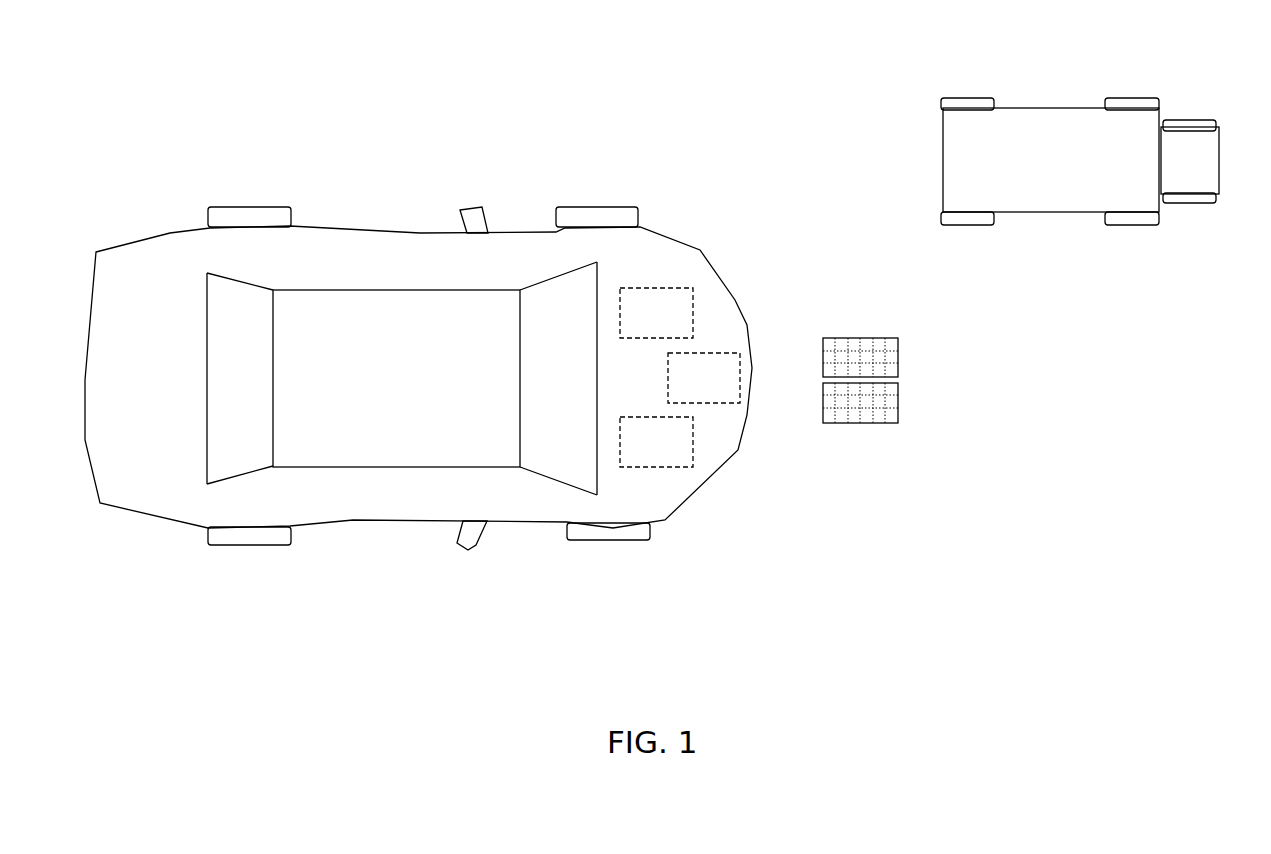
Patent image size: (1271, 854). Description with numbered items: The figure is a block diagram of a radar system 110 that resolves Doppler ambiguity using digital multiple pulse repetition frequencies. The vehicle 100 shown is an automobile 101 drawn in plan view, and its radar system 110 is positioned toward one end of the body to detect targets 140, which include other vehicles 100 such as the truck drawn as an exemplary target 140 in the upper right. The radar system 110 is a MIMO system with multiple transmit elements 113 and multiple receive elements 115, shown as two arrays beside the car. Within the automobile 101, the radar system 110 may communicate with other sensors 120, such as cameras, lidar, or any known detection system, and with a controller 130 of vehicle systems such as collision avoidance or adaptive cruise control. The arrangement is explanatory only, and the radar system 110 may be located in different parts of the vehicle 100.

The vehicle 100 is at (418, 335).
The automobile 101 is at (178, 233).
The target 140 is at (1020, 108).
The radar system 110 is at (817, 339).
The transmit elements 113 is at (880, 360).
The receive elements 115 is at (882, 403).
The other sensors 120 is at (633, 327).
The controller 130 is at (633, 457).